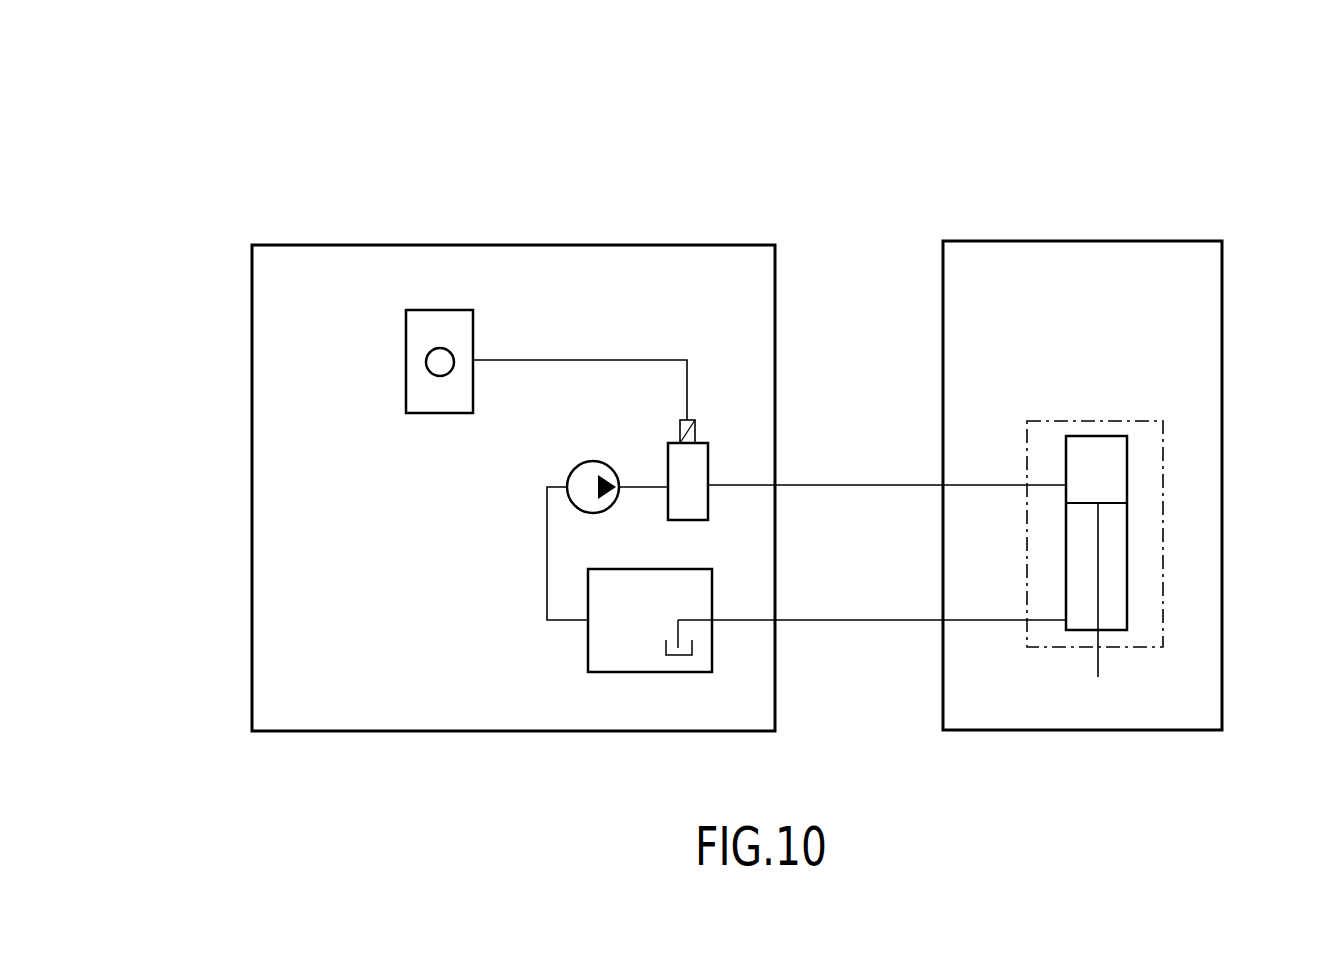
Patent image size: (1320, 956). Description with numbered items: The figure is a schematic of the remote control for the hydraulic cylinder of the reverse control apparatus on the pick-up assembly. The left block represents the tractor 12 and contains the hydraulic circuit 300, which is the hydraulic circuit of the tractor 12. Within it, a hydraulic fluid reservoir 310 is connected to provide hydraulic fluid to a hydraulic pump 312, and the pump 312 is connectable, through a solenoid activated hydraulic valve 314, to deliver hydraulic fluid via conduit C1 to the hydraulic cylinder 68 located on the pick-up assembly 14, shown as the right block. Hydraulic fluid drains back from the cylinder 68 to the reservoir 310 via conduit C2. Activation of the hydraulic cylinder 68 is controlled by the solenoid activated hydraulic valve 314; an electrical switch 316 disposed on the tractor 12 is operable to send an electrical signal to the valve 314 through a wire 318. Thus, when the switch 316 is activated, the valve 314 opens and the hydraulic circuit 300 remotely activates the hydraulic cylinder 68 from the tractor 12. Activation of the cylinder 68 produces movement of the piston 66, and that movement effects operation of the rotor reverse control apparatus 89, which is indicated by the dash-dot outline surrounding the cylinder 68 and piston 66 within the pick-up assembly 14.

The tractor 12 is at (296, 218).
The pick-up assembly 14 is at (1097, 215).
The electrical switch 316 is at (440, 310).
The wire 318 is at (612, 360).
The hydraulic circuit 300 is at (522, 558).
The hydraulic pump 312 is at (572, 472).
The solenoid activated hydraulic valve 314 is at (708, 502).
The hydraulic fluid reservoir 310 is at (588, 666).
The conduit C1 is at (858, 478).
The conduit C2 is at (858, 626).
The rotor reverse control apparatus 89 is at (1092, 422).
The hydraulic cylinder 68 is at (1127, 473).
The piston 66 is at (1098, 657).